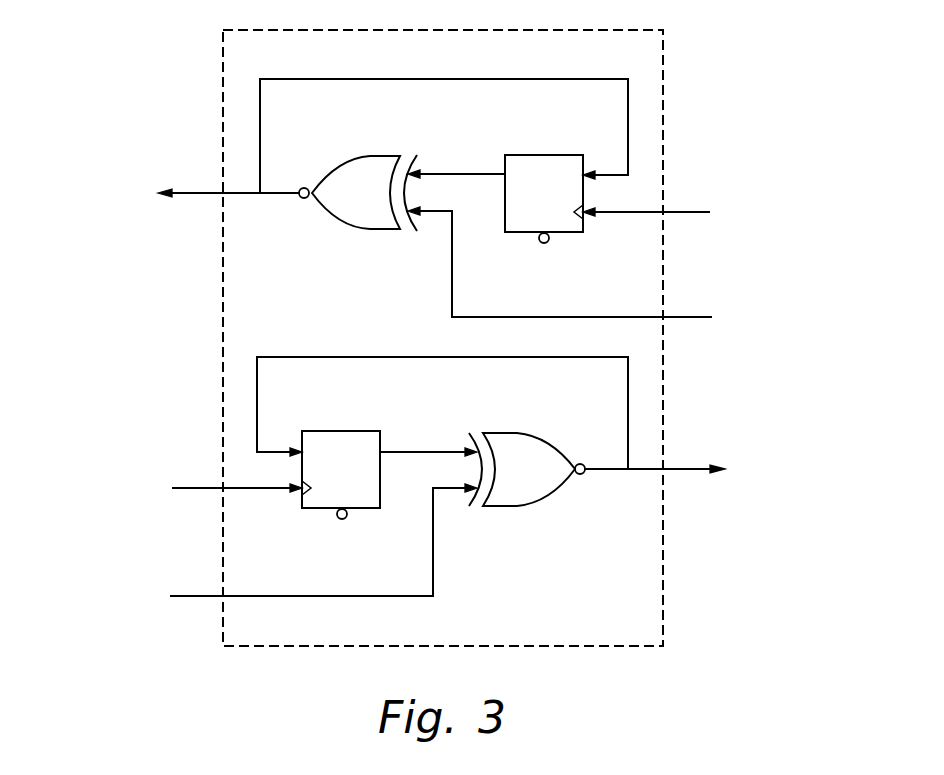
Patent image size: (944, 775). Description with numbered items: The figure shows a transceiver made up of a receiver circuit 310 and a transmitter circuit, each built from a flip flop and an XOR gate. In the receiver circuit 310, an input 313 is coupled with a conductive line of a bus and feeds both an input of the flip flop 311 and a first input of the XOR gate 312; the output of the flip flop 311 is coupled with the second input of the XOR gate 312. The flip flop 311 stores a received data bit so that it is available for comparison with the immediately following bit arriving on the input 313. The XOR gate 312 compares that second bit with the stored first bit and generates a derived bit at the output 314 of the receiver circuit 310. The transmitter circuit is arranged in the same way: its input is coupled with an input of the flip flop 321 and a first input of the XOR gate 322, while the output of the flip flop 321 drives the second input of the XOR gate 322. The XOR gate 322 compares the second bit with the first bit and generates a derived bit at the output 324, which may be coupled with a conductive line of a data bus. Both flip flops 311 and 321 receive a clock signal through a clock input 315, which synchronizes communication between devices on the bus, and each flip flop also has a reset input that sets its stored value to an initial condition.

The receiver circuit 310 is at (583, 31).
The flip flop 311 is at (545, 153).
The XOR gate 312 is at (373, 153).
The input 313 is at (692, 317).
The output 314 is at (198, 192).
The clock input 315 is at (690, 210).
The flip flop 321 is at (348, 431).
The XOR gate 322 is at (512, 432).
The output 324 is at (688, 468).